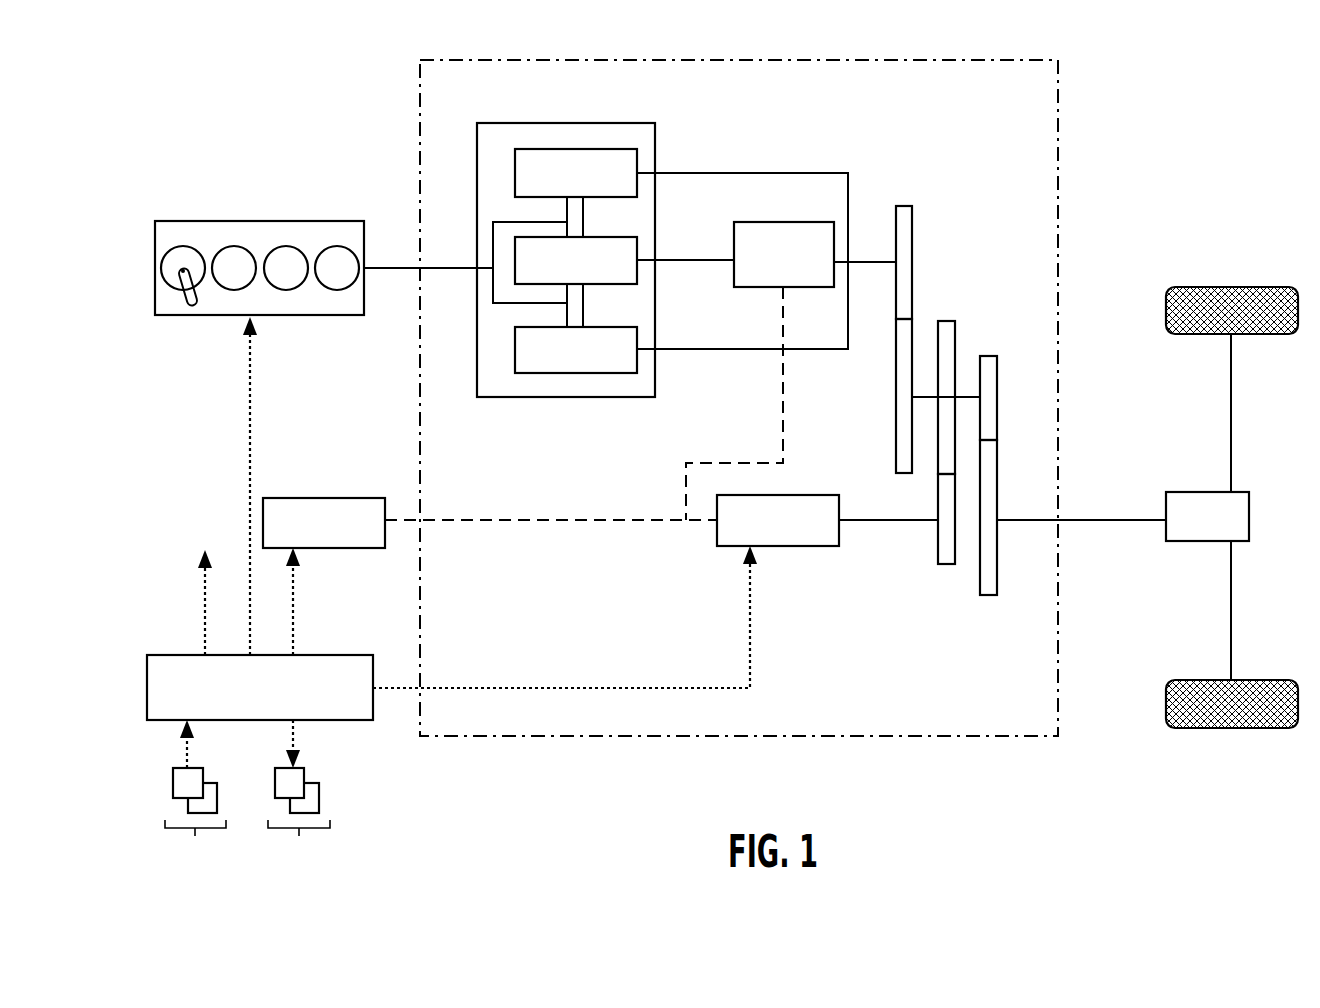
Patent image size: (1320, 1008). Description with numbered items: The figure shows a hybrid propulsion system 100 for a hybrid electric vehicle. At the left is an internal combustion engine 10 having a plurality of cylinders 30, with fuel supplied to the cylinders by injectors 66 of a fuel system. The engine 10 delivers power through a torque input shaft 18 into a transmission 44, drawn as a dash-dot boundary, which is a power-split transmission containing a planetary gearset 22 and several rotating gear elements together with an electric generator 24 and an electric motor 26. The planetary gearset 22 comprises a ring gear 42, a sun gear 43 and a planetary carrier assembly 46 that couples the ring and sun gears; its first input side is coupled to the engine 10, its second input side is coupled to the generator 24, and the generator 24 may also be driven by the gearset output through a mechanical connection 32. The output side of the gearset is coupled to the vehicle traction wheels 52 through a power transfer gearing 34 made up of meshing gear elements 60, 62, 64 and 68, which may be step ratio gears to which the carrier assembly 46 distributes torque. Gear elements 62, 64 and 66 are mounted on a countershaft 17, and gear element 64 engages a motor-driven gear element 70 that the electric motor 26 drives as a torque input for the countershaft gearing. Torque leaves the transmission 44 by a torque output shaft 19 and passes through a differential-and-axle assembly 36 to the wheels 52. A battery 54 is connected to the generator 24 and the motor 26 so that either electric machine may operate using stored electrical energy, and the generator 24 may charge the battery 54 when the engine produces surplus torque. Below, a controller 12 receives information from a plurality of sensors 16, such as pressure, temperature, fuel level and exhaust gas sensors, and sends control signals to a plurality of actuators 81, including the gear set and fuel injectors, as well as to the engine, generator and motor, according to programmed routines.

The hybrid propulsion system 100 is at (1264, 140).
The internal combustion engine 10 is at (184, 221).
The cylinders 30 is at (177, 250).
The injectors 66 is at (185, 303).
The torque input shaft 18 is at (372, 268).
The planetary gearset 22 is at (518, 123).
The ring gear 42 is at (681, 261).
The sun gear 43 is at (576, 260).
The planetary carrier assembly 46 is at (577, 227).
The mechanical connection 32 is at (670, 260).
The electric generator 24 is at (791, 371).
The power transfer gearing 34 is at (988, 194).
The meshing gear element 60 is at (900, 206).
The gear element 62 is at (896, 410).
The gear element 64 is at (944, 321).
The meshing gear element 68 is at (988, 595).
The motor-driven gear element 70 is at (946, 564).
The countershaft 17 is at (920, 397).
The transmission 44 is at (1058, 106).
The electric motor 26 is at (827, 520).
The torque output shaft 19 is at (1082, 520).
The differential-and-axle assembly 36 is at (1207, 507).
The vehicle traction wheels 52 is at (1222, 287).
The battery 54 is at (490, 523).
The controller 12 is at (452, 518).
The sensors 16 is at (191, 797).
The actuators 81 is at (294, 797).